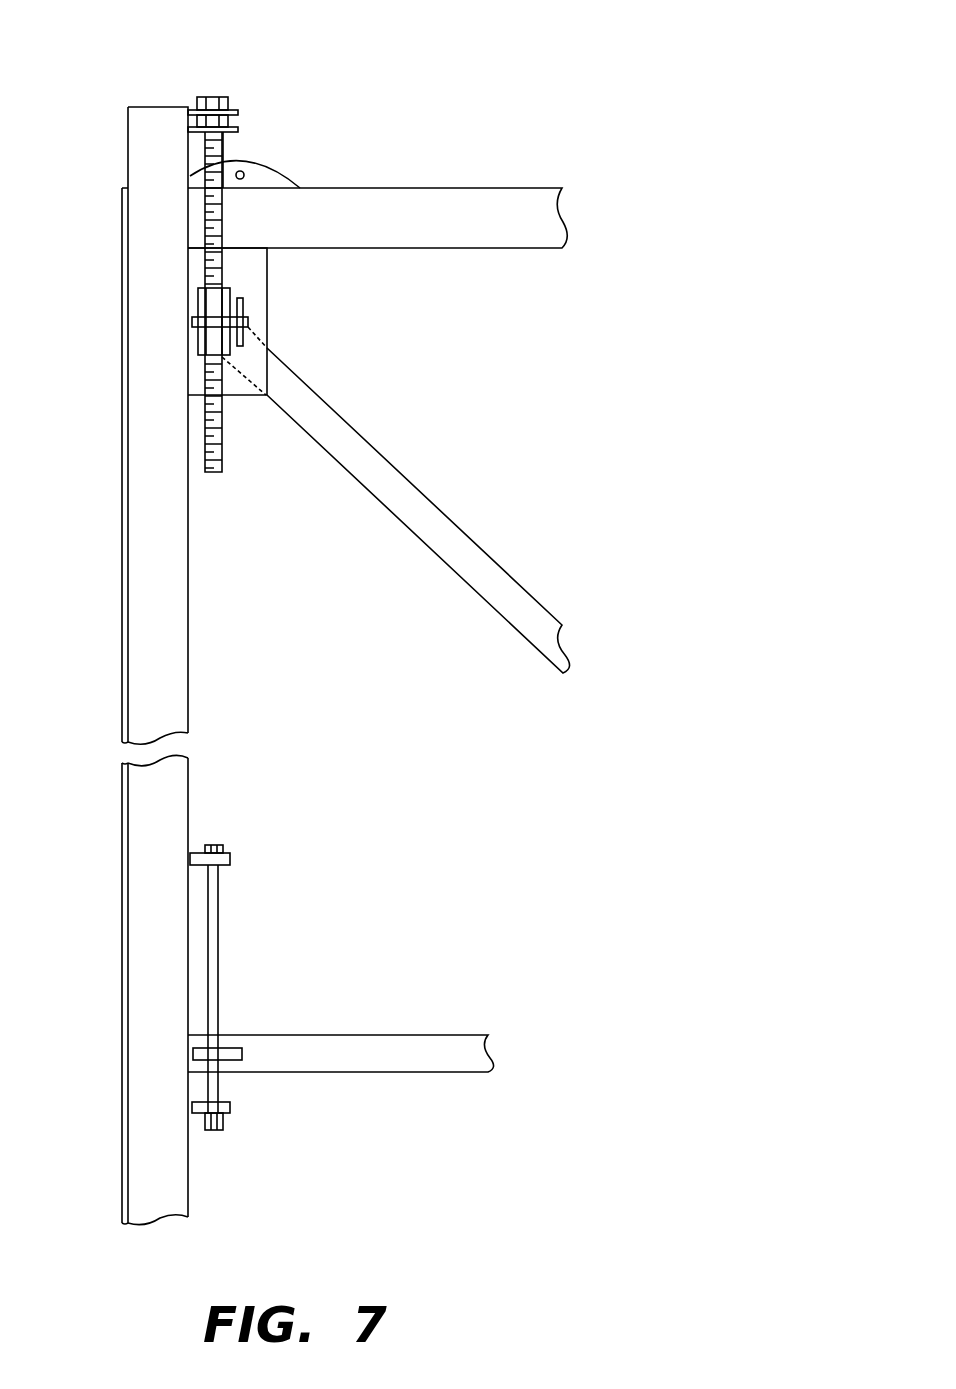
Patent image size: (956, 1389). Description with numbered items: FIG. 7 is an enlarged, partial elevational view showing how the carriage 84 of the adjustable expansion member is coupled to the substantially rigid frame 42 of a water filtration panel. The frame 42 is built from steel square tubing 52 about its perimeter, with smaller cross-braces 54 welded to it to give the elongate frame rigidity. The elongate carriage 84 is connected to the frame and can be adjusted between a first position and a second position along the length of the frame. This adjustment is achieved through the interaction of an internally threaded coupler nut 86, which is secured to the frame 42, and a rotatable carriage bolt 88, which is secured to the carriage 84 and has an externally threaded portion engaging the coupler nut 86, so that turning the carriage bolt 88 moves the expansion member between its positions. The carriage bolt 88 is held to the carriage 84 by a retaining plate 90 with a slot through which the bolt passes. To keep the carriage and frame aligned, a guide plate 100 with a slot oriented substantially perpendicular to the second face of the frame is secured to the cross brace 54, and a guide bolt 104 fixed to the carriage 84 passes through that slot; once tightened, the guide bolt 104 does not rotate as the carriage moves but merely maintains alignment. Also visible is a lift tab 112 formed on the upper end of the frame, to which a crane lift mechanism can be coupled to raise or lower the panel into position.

The frame 42 is at (590, 208).
The steel square tubing 52 is at (503, 193).
The cross-brace 54 is at (505, 580).
The carriage 84 is at (156, 112).
The coupler nut 86 is at (225, 295).
The carriage bolt 88 is at (213, 100).
The retaining plate 90 is at (235, 110).
The guide plate 100 is at (230, 1052).
The guide bolt 104 is at (215, 890).
The lift tab 112 is at (285, 178).